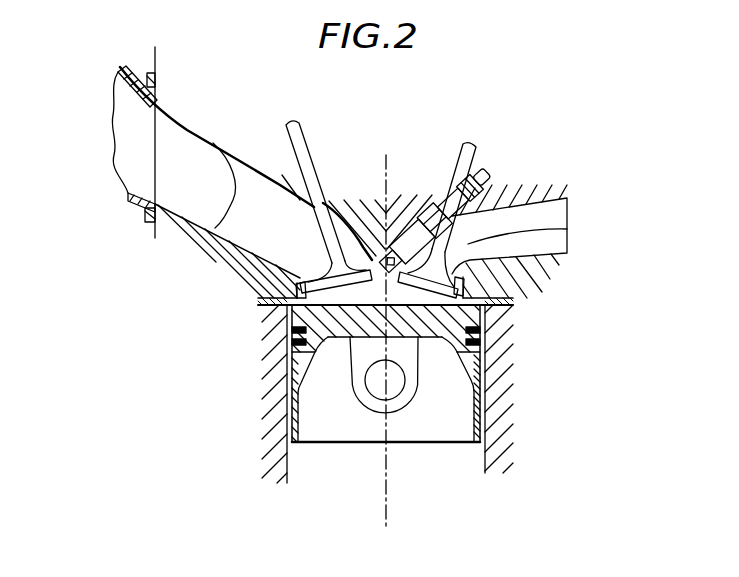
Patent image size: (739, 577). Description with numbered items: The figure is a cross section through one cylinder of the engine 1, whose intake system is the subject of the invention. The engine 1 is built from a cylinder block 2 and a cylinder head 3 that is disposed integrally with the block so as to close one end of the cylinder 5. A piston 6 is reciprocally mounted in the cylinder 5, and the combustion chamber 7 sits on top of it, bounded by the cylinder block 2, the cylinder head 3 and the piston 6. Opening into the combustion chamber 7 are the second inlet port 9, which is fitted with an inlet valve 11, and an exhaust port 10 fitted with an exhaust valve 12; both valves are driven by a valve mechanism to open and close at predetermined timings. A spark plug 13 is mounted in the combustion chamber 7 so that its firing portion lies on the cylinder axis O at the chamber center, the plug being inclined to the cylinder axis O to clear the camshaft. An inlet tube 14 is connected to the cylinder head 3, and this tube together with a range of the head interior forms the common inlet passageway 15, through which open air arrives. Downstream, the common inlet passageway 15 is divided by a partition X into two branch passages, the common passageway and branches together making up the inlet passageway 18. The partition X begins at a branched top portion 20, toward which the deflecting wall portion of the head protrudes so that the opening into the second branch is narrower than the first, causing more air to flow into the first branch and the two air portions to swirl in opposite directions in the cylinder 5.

The engine 1 is at (510, 135).
The cylinder block 2 is at (512, 358).
The cylinder head 3 is at (548, 271).
The cylinder 5 is at (490, 461).
The piston 6 is at (473, 374).
The combustion chamber 7 is at (483, 333).
The second inlet port 9 is at (302, 243).
The exhaust port 10 is at (567, 232).
The inlet valve 11 is at (292, 311).
The exhaust valve 12 is at (468, 268).
The spark plug 13 is at (493, 172).
The inlet tube 14 is at (132, 68).
The common inlet passageway 15 is at (181, 192).
The inlet passageway 18 is at (190, 128).
The branched top portion 20 is at (222, 160).
The partition X is at (260, 183).
The cylinder axis O is at (386, 504).